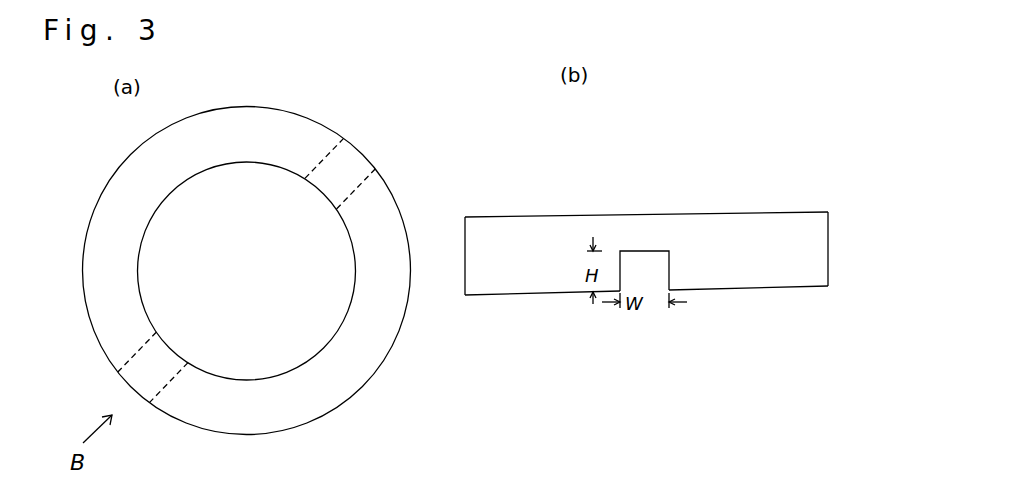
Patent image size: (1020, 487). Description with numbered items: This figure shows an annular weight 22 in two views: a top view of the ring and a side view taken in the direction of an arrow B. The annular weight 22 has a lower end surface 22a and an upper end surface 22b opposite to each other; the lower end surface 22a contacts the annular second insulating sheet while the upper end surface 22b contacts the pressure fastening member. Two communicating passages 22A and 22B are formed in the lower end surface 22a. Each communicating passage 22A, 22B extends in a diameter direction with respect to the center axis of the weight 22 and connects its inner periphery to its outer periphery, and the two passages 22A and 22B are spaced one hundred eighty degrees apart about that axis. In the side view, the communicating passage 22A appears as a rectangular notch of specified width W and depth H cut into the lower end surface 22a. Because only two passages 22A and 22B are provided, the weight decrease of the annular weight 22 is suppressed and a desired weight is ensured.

The annular weight 22 is at (328, 397).
The communicating passage 22A is at (142, 345).
The communicating passage 22B is at (313, 172).
The lower end surface 22a is at (778, 287).
The upper end surface 22b is at (767, 209).